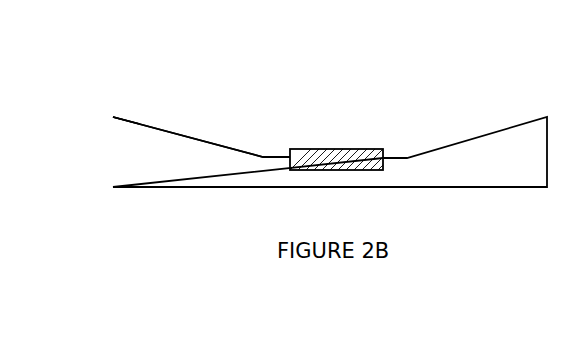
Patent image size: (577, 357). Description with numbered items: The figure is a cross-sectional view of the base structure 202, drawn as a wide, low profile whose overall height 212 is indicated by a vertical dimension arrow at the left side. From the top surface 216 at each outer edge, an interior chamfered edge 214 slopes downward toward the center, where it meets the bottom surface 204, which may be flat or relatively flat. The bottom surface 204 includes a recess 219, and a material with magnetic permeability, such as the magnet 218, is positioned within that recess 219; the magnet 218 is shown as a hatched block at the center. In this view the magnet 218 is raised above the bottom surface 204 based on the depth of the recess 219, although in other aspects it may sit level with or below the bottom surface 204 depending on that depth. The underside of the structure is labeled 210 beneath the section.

The base structure 202 is at (453, 60).
The bottom surface 204 is at (393, 138).
The bottom surface 210 is at (523, 214).
The height 212 is at (99, 118).
The interior chamfered edge 214 is at (181, 132).
The top surface 216 is at (122, 109).
The magnet 218 is at (348, 152).
The recess 219 is at (384, 169).